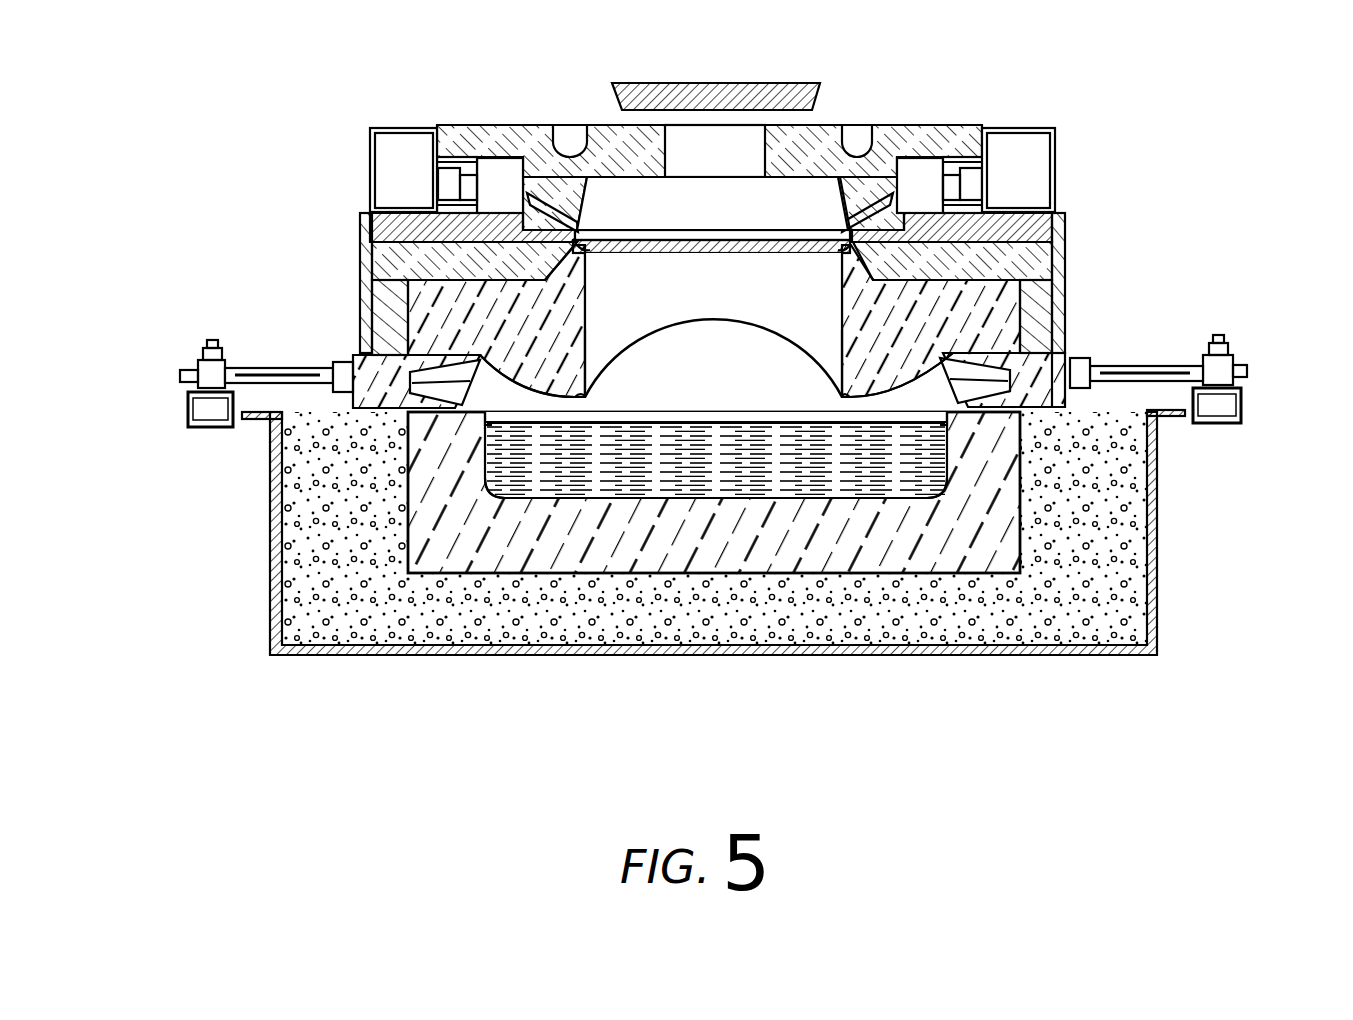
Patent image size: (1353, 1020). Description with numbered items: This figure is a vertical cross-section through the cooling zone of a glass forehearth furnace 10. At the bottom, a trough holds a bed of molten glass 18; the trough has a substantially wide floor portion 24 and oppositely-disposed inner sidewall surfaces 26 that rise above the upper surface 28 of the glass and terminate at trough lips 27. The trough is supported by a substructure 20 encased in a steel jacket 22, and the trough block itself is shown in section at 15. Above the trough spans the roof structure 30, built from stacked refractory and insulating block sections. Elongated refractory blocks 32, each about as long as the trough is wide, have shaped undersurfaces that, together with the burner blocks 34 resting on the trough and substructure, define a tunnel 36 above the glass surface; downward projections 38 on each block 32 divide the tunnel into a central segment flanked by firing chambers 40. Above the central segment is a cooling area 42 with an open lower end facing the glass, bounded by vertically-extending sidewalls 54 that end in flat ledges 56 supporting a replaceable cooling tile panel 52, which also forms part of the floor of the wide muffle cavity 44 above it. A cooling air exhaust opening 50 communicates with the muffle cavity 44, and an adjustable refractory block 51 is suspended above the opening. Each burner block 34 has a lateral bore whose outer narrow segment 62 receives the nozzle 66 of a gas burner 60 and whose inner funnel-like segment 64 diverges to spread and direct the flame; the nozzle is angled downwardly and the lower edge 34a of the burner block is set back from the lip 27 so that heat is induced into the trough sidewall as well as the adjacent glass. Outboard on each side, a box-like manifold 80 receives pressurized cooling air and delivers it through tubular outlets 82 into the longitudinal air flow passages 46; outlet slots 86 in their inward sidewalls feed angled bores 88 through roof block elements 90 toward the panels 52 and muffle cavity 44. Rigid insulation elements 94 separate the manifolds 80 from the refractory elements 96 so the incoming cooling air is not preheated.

The glass forehearth furnace 10 is at (410, 663).
The mold block 15 is at (738, 552).
The molten glass 18 is at (708, 440).
The substructure 20 is at (700, 630).
The steel jacket 22 is at (1160, 522).
The floor portion 24 is at (735, 495).
The inner sidewall surfaces 26 is at (493, 495).
The trough lips 27 is at (487, 418).
The upper surface of the molten glass 28 is at (766, 422).
The roof structure 30 is at (757, 223).
The refractory blocks 32 is at (517, 322).
The burner blocks 34 is at (1028, 375).
The lower edge of the burner block bottom 34a is at (430, 418).
The tunnel 36 is at (717, 367).
The downward projections 38 is at (578, 394).
The firing chambers 40 is at (522, 411).
The cooling areas 42 is at (710, 291).
The muffle cavities 44 is at (698, 222).
The air flow passages 46 is at (516, 205).
The cooling air exhaust openings 50 is at (684, 120).
The refractory block 51 is at (650, 82).
The cooling tile panels 52 is at (780, 232).
The sidewalls 54 is at (586, 337).
The ledge 56 is at (588, 250).
The gas burners 60 is at (196, 364).
The narrow segment 62 is at (1078, 362).
The funnel-like segment 64 is at (915, 368).
The nozzle 66 is at (1040, 395).
The manifolds 80 is at (393, 128).
The tubular outlets 82 is at (450, 176).
The outlet slots 86 is at (508, 128).
The bores 88 is at (548, 212).
The roof block elements 90 is at (582, 198).
The insulation elements 94 is at (612, 127).
The refractory elements 96 is at (370, 266).